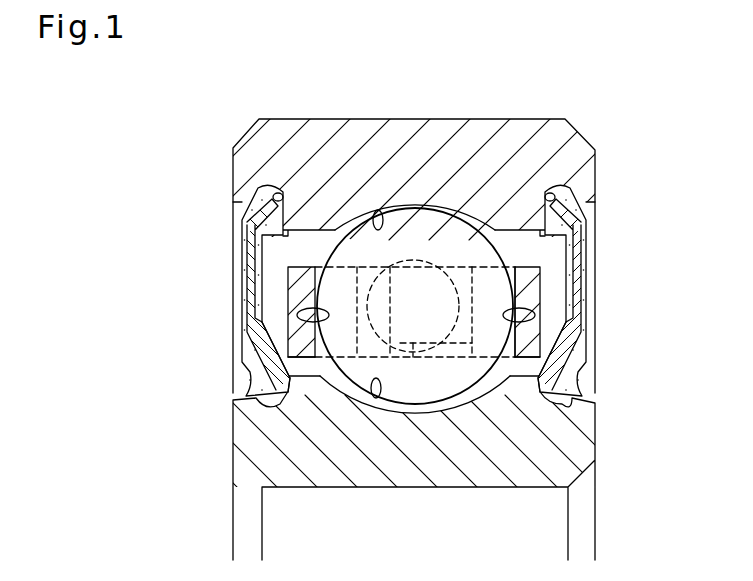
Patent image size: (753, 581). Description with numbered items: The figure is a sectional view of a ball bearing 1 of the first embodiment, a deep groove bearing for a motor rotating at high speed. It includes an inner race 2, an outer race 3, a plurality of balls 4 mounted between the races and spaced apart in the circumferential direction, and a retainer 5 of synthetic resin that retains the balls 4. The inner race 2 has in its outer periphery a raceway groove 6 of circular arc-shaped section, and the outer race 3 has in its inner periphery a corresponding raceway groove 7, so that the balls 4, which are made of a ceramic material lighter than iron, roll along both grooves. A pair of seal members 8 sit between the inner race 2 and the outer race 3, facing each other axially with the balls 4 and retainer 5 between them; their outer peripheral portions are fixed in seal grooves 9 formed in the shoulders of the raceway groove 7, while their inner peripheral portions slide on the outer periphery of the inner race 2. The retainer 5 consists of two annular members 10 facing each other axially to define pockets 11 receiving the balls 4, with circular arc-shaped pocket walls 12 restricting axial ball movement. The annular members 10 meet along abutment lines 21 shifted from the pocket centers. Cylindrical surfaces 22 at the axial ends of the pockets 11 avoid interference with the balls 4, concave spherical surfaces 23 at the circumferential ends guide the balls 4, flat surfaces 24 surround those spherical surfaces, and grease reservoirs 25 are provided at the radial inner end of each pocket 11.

The ball bearing 1 is at (233, 140).
The inner race 2 is at (232, 424).
The outer race 3 is at (232, 172).
The balls 4 is at (403, 212).
The retainer 5 is at (288, 270).
The raceway groove 6 is at (353, 396).
The raceway groove 7 is at (381, 211).
The seal members 8 is at (244, 352).
The seal grooves 9 is at (283, 190).
The annular members 10 is at (288, 298).
The pockets 11 is at (517, 265).
The pocket walls 12 is at (300, 358).
The abutment lines 21 is at (432, 288).
The cylindrical surfaces 22 is at (300, 312).
The concave spherical surfaces 23 is at (445, 300).
The flat surfaces 24 is at (462, 378).
The grease reservoirs 25 is at (413, 345).